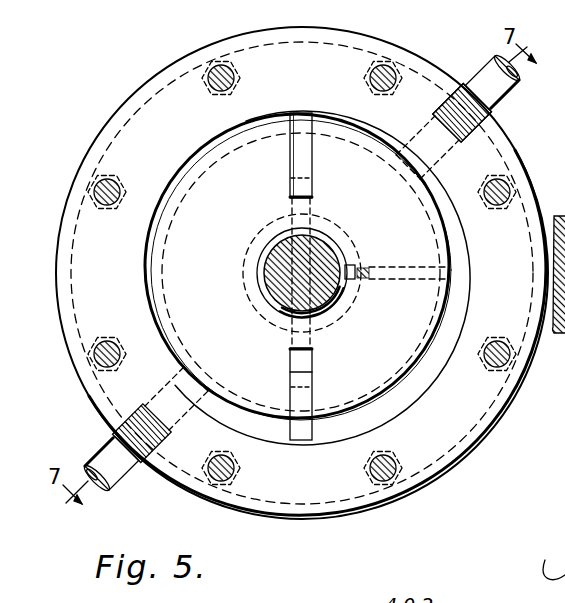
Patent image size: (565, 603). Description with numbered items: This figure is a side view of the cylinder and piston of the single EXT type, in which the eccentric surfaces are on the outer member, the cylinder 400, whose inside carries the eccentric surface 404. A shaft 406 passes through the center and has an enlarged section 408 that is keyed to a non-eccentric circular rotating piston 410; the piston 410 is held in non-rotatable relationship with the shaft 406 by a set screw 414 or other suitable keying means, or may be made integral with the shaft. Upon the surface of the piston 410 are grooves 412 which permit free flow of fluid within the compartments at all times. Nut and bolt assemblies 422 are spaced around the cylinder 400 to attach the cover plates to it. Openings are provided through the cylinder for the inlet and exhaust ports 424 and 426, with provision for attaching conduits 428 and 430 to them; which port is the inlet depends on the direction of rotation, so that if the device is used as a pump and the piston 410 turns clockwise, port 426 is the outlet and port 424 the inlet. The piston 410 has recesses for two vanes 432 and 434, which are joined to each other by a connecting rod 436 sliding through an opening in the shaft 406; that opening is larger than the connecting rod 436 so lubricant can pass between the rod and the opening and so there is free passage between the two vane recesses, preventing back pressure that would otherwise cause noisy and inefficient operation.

The cylinder 400 is at (357, 53).
The eccentric surface 404 is at (400, 393).
The shaft 406 is at (288, 278).
The enlarged section 408 is at (262, 268).
The non-eccentric circular rotating piston 410 is at (148, 293).
The grooves 412 is at (181, 337).
The set screw 414 is at (354, 279).
The nut and bolt assemblies 422 is at (90, 186).
The port 424 is at (444, 110).
The port 426 is at (198, 379).
The conduit 428 is at (483, 82).
The conduit 430 is at (100, 456).
The vane 432 is at (297, 437).
The vane 434 is at (300, 120).
The connecting rod 436 is at (312, 207).